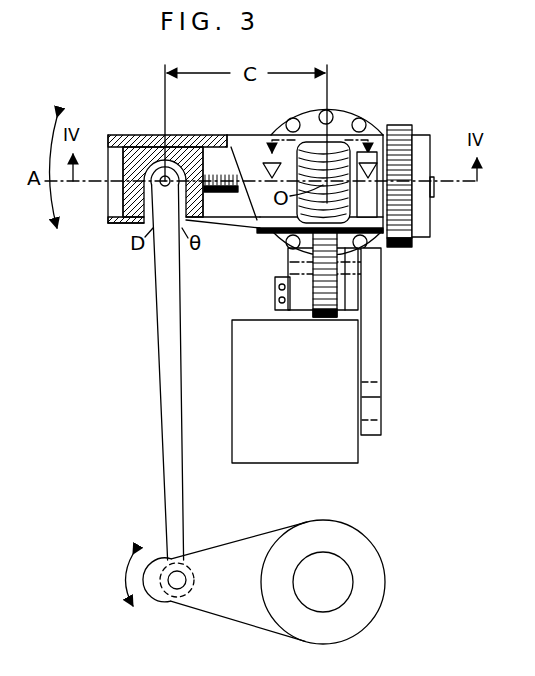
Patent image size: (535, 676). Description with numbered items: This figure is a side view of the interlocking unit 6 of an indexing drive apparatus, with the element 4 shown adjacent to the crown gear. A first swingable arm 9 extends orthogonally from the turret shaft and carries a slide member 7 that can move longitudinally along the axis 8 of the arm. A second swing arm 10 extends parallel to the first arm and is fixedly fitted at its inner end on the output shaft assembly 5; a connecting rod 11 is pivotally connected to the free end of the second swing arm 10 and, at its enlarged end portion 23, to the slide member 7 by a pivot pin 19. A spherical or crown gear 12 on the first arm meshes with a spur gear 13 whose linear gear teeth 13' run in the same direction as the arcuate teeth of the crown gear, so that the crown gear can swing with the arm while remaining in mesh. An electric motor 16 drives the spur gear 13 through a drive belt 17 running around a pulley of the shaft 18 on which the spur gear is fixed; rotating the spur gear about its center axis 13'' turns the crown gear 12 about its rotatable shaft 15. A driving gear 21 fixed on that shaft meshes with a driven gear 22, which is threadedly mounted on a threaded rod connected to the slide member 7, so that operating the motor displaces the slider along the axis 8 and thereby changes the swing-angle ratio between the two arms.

The gear wheel 4 is at (308, 113).
The output shaft assembly 5 is at (343, 583).
The interlocking unit 6 is at (417, 122).
The slide member 7 is at (132, 145).
The axis of the first swingable arm 8 is at (123, 193).
The first swingable arm 9 is at (219, 137).
The second swing arm 10 is at (227, 548).
The connecting rod 11 is at (167, 352).
The crown gear 12 is at (330, 148).
The spur gear 13 is at (366, 279).
The gear teeth 13' is at (315, 331).
The center axis 13'' is at (364, 277).
The rotatable shaft 15 is at (392, 178).
The electric motor 16 is at (325, 457).
The drive belt 17 is at (377, 360).
The shaft 18 is at (292, 255).
The pivot pin 19 is at (175, 150).
The driving gear 21 is at (403, 245).
The driven gear 22 is at (408, 215).
The enlarged end portion 23 is at (153, 162).